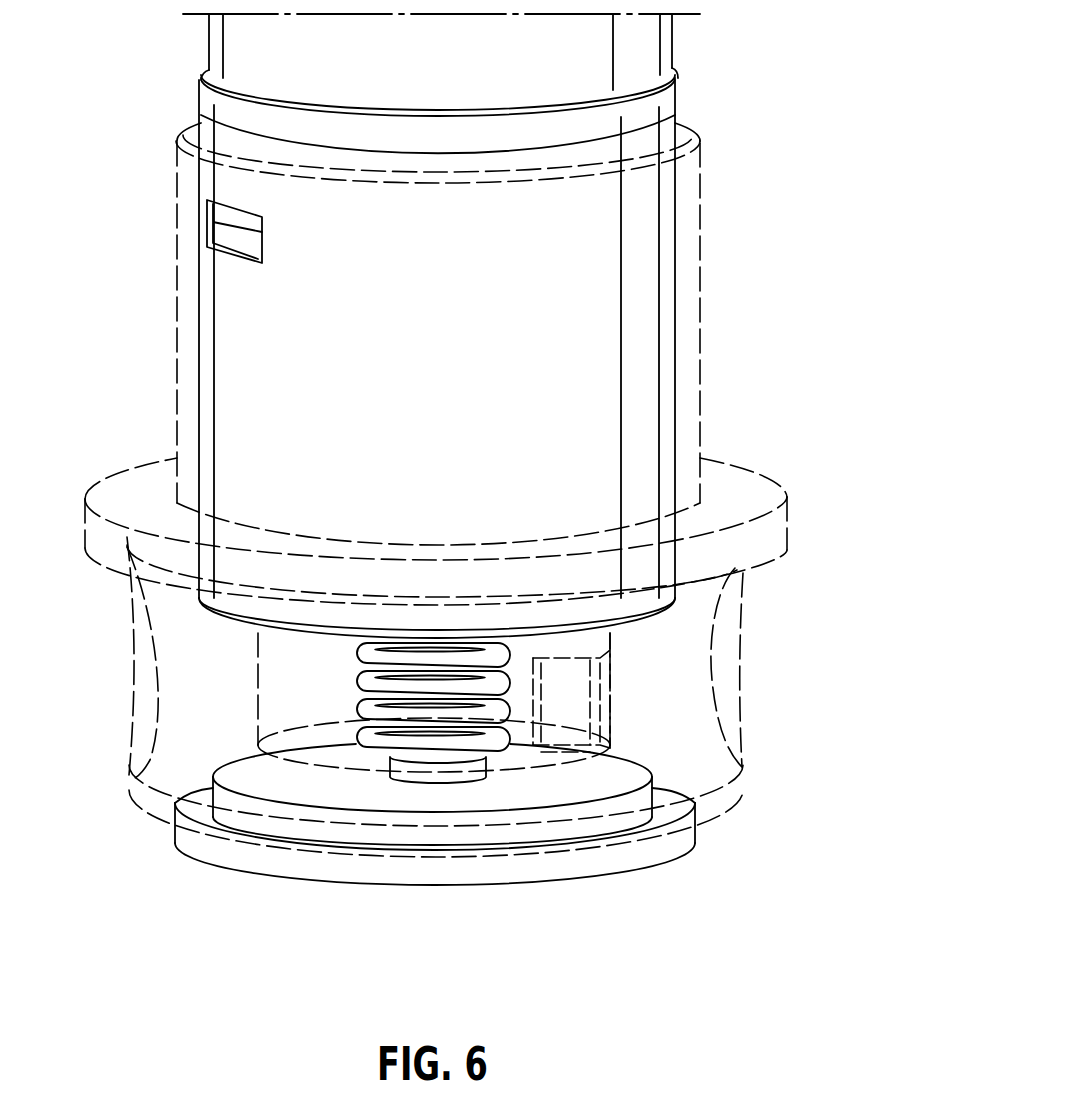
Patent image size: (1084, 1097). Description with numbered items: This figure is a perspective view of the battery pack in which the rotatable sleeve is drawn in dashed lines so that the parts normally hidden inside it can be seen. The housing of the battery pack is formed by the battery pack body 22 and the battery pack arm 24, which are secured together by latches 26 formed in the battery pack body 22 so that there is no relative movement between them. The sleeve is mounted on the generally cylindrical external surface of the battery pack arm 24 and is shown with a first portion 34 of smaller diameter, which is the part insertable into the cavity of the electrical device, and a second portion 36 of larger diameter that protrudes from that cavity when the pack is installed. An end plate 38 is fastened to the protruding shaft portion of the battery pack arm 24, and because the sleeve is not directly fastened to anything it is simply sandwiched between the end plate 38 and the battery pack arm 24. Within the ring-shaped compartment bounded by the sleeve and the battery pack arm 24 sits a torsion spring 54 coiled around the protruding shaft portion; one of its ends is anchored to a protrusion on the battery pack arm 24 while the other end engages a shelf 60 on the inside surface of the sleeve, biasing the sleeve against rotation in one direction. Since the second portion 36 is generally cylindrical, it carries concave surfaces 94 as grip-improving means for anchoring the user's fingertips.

The battery pack body 22 is at (642, 52).
The battery pack arm 24 is at (600, 272).
The latches 26 is at (222, 229).
The first portion 34 is at (692, 350).
The second portion 36 is at (687, 763).
The end plate 38 is at (562, 867).
The torsion spring 54 is at (380, 745).
The shelf 60 is at (580, 698).
The concave surfaces 94 is at (722, 636).